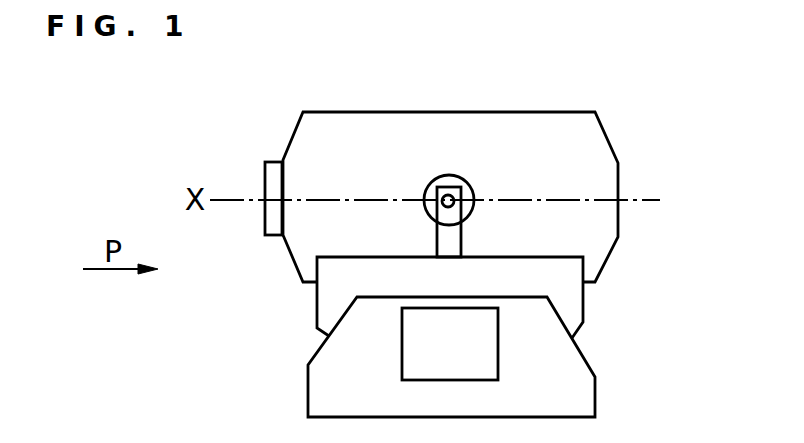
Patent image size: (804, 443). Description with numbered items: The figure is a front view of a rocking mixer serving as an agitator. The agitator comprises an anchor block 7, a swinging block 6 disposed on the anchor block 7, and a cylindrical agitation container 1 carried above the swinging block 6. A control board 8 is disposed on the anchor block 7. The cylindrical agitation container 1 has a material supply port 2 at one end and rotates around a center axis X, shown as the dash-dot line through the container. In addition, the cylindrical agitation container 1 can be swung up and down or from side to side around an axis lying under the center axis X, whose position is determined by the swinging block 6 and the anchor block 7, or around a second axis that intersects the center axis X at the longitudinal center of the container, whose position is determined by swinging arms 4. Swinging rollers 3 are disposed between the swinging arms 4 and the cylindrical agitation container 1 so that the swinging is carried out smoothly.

The cylindrical agitation container 1 is at (530, 130).
The material supply port 2 is at (277, 180).
The swinging rollers 3 is at (472, 200).
The swinging arms 4 is at (452, 243).
The swinging block 6 is at (572, 298).
The anchor block 7 is at (575, 393).
The control board 8 is at (425, 355).